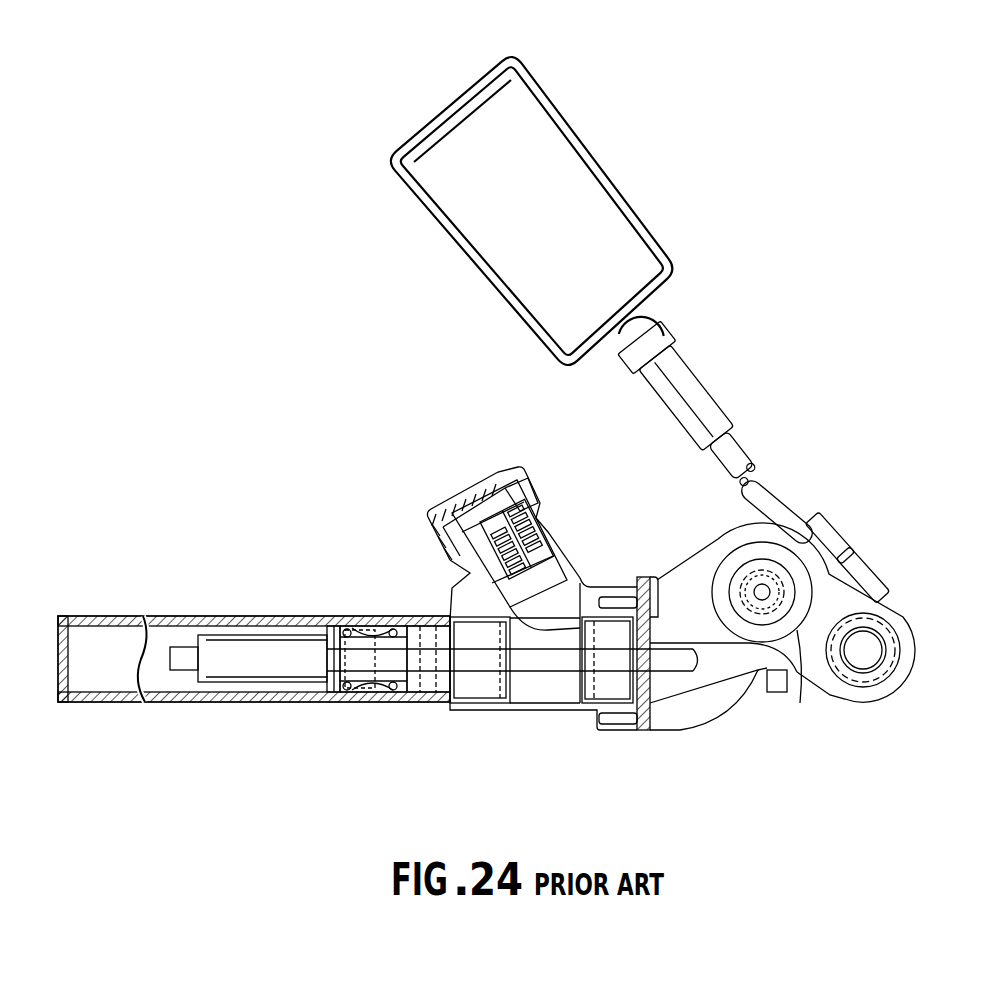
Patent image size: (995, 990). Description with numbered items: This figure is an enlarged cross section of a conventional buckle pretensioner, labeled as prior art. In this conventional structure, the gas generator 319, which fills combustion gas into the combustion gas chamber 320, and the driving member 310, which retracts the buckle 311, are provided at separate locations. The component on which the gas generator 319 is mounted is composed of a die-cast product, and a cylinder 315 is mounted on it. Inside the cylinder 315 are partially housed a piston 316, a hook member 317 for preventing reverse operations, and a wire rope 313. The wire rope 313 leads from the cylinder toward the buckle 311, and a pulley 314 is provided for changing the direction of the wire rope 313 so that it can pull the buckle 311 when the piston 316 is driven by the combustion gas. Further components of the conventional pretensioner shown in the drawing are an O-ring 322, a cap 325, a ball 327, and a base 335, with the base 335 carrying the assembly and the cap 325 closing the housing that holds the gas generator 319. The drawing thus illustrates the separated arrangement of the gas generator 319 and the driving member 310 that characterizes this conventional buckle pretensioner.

The driving member 310 is at (278, 705).
The buckle 311 is at (470, 242).
The wire rope 313 is at (740, 446).
The pulley 314 is at (783, 623).
The cylinder 315 is at (183, 703).
The piston 316 is at (368, 705).
The hook member 317 is at (242, 675).
The gas generator 319 is at (528, 498).
The combustion gas chamber 320 is at (565, 678).
The O-ring 322 is at (337, 703).
The cap 325 is at (502, 470).
The ball 327 is at (403, 703).
The base 335 is at (868, 690).